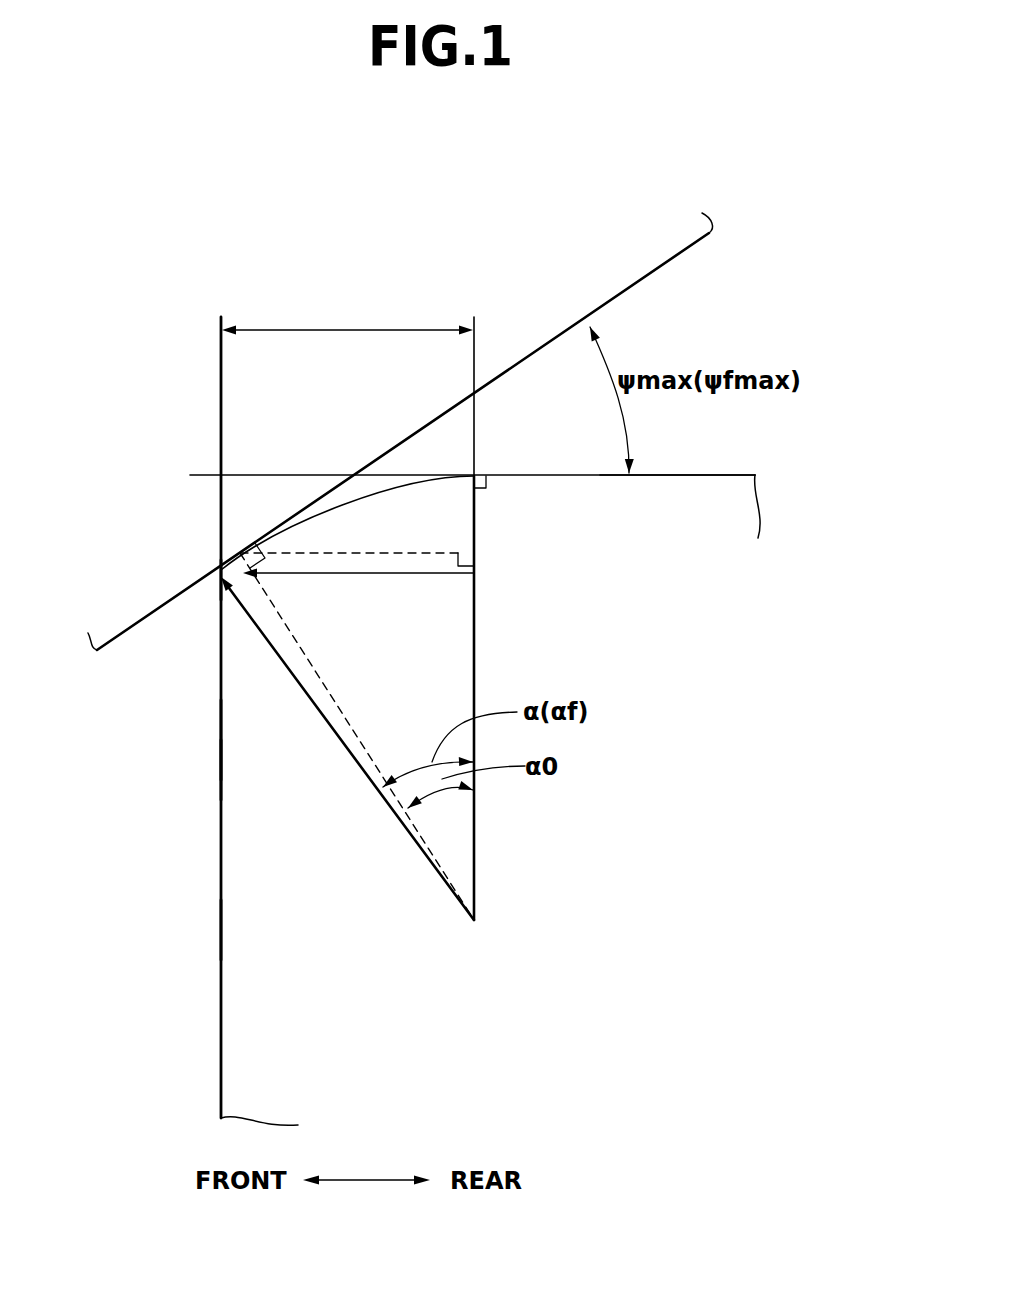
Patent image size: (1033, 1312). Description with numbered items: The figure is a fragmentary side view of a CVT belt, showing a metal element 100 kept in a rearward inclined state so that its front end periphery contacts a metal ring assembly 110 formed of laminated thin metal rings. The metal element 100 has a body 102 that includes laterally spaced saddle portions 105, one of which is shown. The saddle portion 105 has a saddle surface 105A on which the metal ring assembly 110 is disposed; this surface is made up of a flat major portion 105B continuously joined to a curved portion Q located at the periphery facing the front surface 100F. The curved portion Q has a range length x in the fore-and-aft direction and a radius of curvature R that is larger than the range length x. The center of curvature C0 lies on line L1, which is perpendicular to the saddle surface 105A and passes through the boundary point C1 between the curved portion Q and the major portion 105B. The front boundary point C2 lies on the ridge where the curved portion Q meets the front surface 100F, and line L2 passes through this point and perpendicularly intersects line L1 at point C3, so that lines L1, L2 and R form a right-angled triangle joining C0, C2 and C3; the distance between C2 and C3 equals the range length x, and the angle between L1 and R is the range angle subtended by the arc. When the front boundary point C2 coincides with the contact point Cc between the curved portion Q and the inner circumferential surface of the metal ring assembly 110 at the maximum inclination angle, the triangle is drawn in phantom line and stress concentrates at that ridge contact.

The metal element 100 is at (206, 1038).
The front surface 100F is at (221, 737).
The body 102 is at (228, 933).
The saddle portion 105 is at (228, 773).
The saddle surface 105A is at (692, 460).
The flat major portion 105B is at (733, 475).
The metal ring assembly 110 is at (695, 247).
The line L1 is at (476, 655).
The line L2 is at (367, 575).
The boundary point C1 is at (475, 476).
The front boundary point C2 is at (220, 577).
The intersection point C3 is at (476, 573).
The point of contact Cc is at (240, 553).
The center of curvature C0 is at (480, 921).
The radius of curvature R is at (334, 730).
The curved portion Q is at (327, 498).
The range length x is at (347, 316).